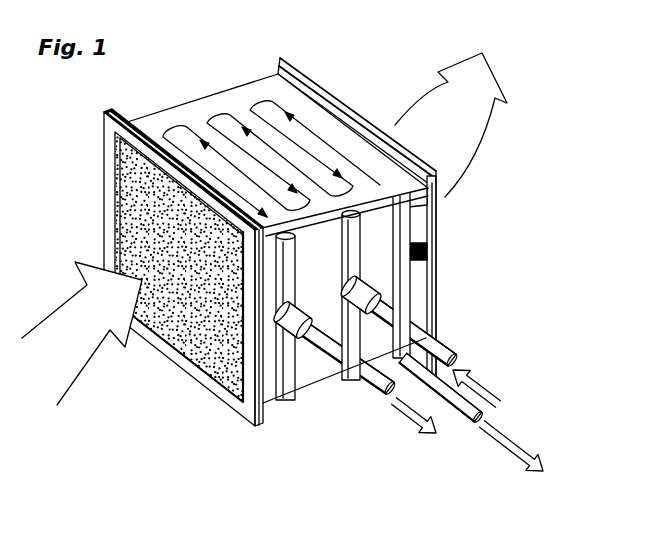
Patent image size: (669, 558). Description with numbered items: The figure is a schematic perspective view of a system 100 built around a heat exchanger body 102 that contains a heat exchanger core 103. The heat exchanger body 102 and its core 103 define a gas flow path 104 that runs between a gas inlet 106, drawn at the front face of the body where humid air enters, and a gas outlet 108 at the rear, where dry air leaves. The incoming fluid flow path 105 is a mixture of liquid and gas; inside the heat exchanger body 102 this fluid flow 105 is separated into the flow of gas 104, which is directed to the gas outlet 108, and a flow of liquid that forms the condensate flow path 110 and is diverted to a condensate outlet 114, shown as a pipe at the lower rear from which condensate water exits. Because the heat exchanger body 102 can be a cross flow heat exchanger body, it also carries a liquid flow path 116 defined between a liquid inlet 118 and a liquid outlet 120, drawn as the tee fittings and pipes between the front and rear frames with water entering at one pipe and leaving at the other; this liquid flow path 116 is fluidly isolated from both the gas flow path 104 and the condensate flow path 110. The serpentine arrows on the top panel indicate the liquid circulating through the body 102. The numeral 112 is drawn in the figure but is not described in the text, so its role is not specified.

The system 100 is at (79, 167).
The heat exchanger body 102 is at (192, 104).
The heat exchanger core 103 is at (134, 240).
The gas flow path 104 is at (416, 113).
The fluid flow path 105 is at (58, 306).
The gas inlet 106 is at (203, 347).
The gas outlet 108 is at (440, 242).
The condensate flow path 110 is at (517, 450).
The water outlet 112 is at (381, 412).
The condensate outlet 114 is at (450, 414).
The liquid flow path 116 is at (488, 374).
The liquid inlet 118 is at (384, 279).
The liquid outlet 120 is at (305, 305).